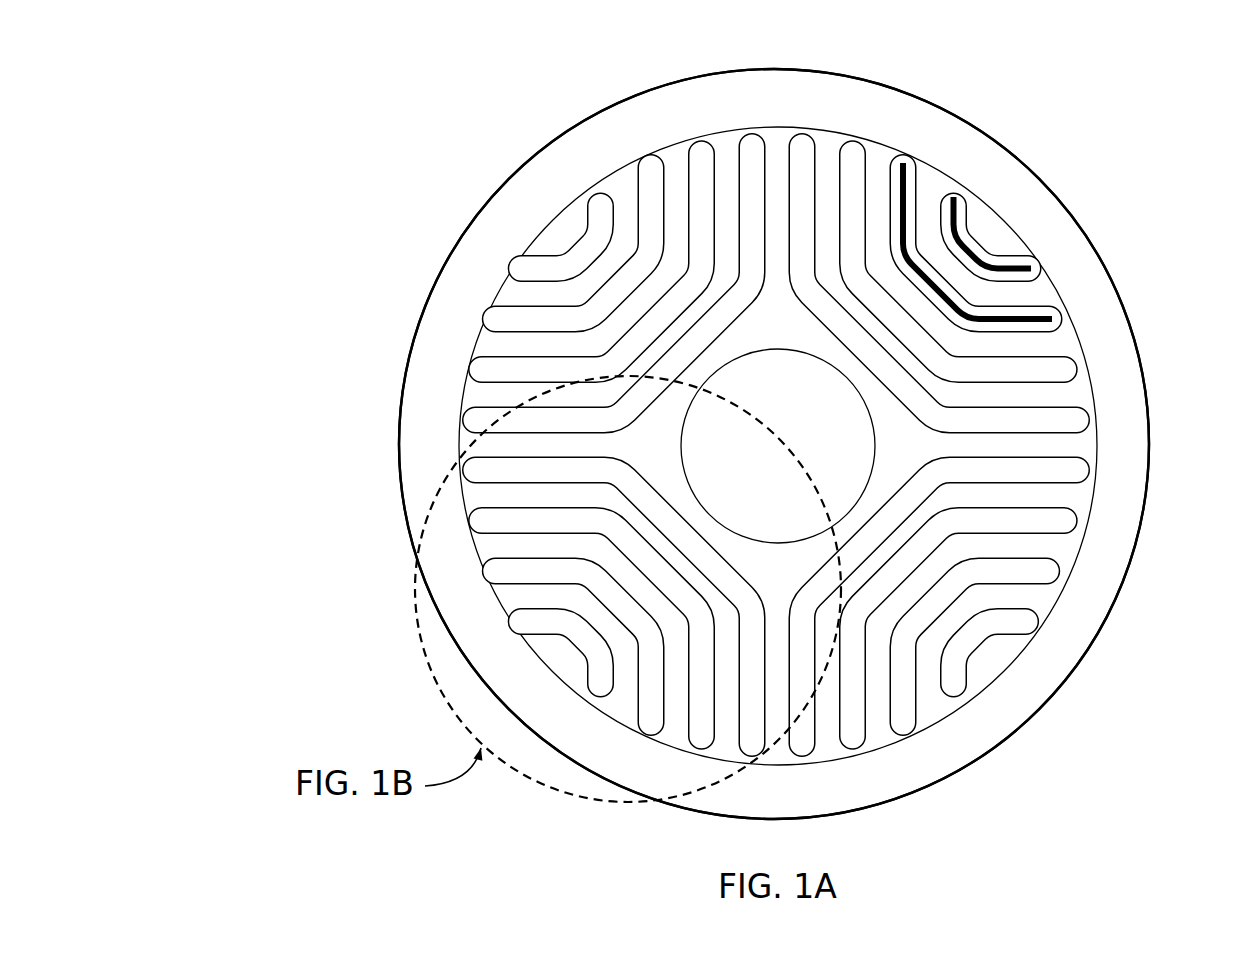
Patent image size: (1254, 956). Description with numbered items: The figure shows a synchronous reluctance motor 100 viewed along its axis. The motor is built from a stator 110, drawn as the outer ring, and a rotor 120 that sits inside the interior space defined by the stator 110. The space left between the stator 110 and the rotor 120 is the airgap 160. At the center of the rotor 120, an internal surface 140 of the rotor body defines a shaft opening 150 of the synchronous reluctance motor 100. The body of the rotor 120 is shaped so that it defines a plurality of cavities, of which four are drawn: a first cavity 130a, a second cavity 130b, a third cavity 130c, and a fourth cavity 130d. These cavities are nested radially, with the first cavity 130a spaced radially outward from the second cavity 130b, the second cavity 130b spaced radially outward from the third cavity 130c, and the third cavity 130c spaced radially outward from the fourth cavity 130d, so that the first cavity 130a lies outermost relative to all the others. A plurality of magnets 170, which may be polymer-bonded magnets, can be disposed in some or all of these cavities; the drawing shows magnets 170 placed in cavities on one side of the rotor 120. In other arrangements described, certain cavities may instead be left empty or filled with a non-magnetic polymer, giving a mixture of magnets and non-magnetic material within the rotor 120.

The synchronous reluctance motor 100 is at (235, 68).
The stator 110 is at (420, 318).
The rotor 120 is at (552, 217).
The first cavity 130a is at (533, 607).
The second cavity 130b is at (507, 558).
The third cavity 130c is at (470, 503).
The fourth cavity 130d is at (488, 447).
The internal surface 140 is at (833, 373).
The shaft opening 150 is at (783, 388).
The airgap 160 is at (487, 256).
The plurality of magnets 170 is at (984, 261).